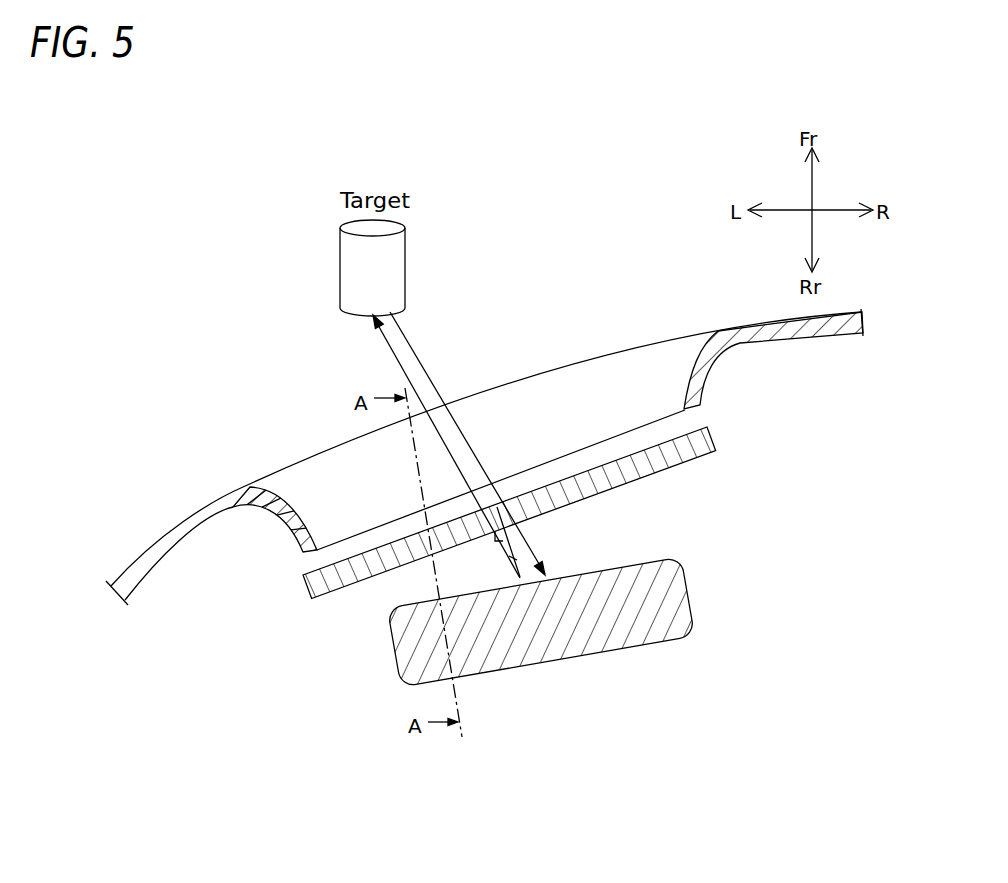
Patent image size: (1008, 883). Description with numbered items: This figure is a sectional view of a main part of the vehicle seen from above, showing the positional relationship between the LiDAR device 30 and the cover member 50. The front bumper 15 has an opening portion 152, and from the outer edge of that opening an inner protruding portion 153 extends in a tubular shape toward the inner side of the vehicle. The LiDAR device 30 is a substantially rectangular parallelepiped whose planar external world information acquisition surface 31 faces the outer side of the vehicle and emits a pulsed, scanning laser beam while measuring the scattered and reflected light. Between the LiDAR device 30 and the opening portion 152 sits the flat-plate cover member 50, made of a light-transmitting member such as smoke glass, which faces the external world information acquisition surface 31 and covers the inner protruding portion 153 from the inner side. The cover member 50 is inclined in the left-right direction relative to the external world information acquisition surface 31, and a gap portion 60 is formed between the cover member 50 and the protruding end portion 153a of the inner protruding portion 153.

The front bumper 15 is at (803, 333).
The opening portion 152 is at (655, 342).
The inner protruding portion 153 is at (347, 500).
The protruding end portion 153a is at (546, 472).
The gap portion 60 is at (595, 438).
The cover member 50 is at (713, 437).
The LiDAR device 30 is at (643, 623).
The external world information acquisition surface 31 is at (640, 560).